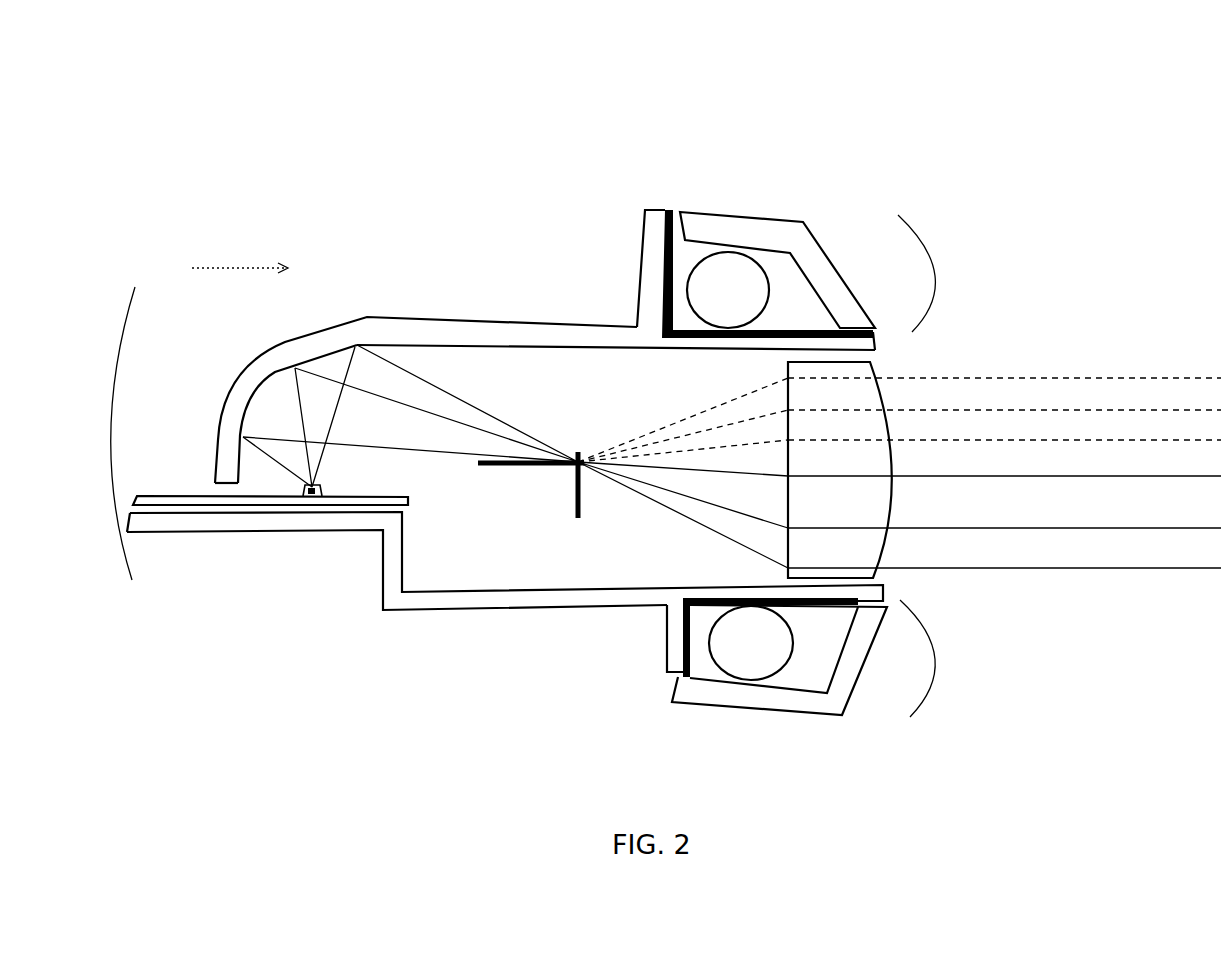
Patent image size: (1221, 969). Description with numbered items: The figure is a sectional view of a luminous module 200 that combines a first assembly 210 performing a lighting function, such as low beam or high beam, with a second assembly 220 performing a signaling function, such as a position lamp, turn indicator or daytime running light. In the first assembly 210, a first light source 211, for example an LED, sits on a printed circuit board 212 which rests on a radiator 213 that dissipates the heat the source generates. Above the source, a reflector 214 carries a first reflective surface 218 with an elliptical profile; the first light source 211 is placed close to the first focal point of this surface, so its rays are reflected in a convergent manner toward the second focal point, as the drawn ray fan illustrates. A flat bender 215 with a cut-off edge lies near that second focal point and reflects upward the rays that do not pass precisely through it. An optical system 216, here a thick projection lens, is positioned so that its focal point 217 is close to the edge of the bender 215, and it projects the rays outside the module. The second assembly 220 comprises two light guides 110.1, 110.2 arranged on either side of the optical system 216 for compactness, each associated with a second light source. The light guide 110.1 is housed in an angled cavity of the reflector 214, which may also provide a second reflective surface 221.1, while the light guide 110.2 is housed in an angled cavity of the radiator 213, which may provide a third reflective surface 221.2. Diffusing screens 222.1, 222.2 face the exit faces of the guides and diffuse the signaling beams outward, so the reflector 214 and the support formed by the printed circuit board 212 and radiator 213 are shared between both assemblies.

The luminous module 200 is at (215, 270).
The first assembly 210 is at (96, 433).
The first light source 211 is at (320, 485).
The printed circuit board 212 is at (188, 497).
The radiator 213 is at (513, 600).
The reflector 214 is at (388, 328).
The bender 215 is at (583, 508).
The optical system 216 is at (862, 520).
The focal point 217 is at (581, 454).
The first reflective surface 218 is at (448, 345).
The second assembly 220 is at (943, 660).
The second reflective surface 221.1 is at (677, 235).
The diffusing screen 222.1 is at (795, 215).
The light guide 110.1 is at (737, 249).
The third reflective surface 221.2 is at (690, 663).
The diffusing screen 222.2 is at (740, 703).
The light guide 110.2 is at (777, 673).